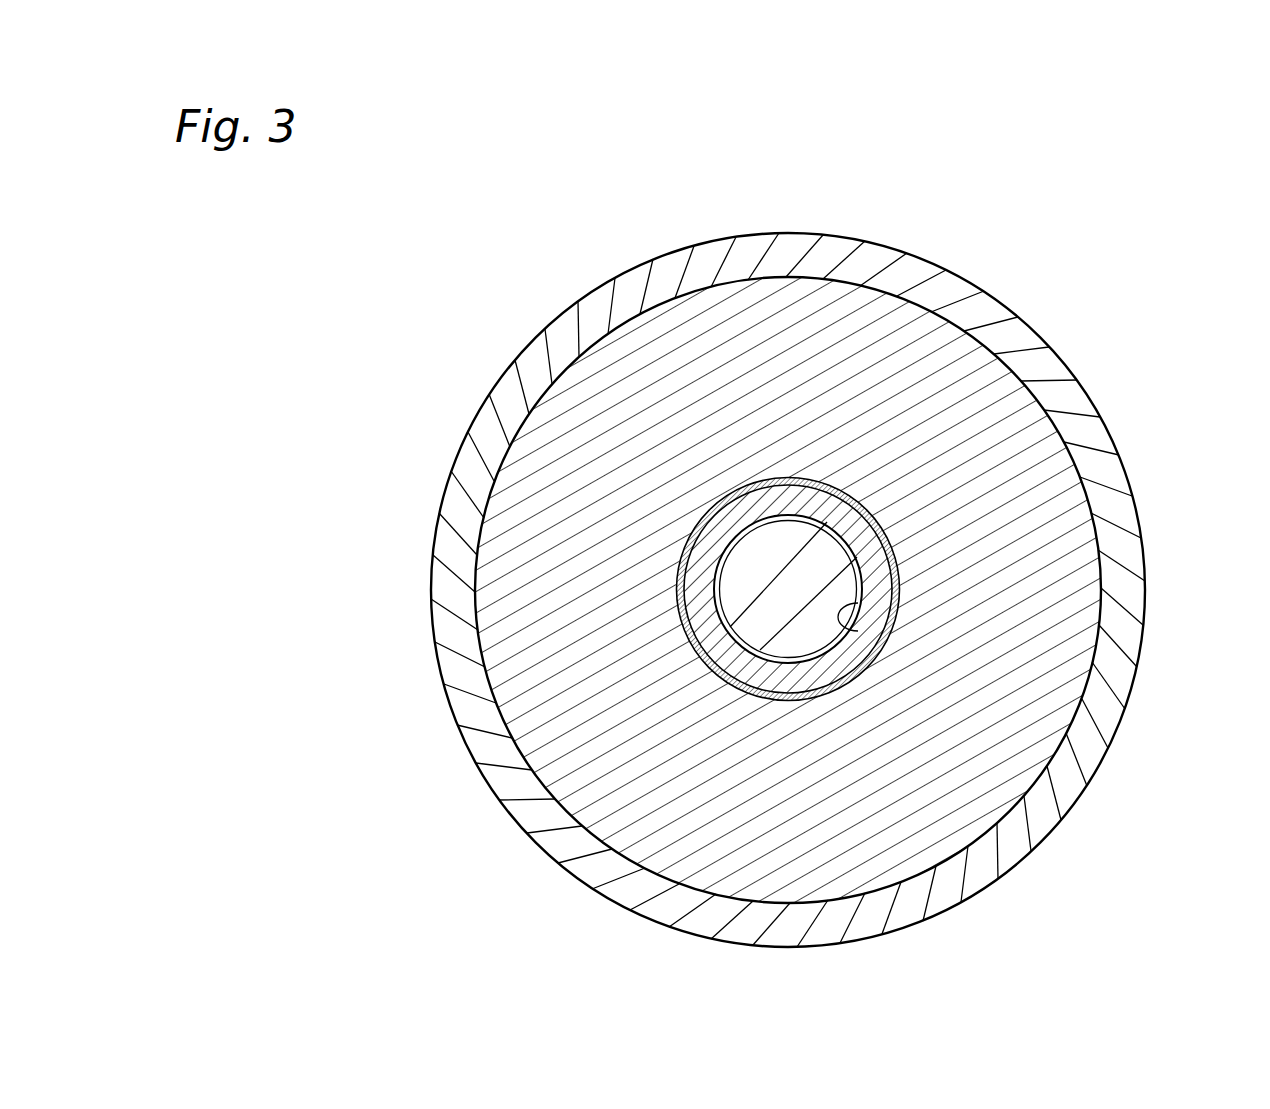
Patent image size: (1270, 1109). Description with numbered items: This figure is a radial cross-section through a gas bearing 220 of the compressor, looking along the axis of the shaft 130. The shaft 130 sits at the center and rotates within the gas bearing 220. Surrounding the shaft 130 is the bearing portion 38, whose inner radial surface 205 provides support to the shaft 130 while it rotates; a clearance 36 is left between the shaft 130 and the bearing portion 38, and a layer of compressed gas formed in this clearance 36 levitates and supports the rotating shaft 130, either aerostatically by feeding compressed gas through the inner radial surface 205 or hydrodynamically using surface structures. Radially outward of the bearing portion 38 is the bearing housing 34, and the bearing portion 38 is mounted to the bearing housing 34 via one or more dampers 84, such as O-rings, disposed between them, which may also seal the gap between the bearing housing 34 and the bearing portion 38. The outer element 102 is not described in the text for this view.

The outer sheath 102 is at (607, 282).
The bearing housing 34 is at (1015, 730).
The gas bearing 220 is at (820, 481).
The dampers 84 is at (869, 557).
The bearing portion 38 is at (891, 532).
The clearance 36 is at (697, 557).
The shaft 130 is at (766, 548).
The inner radial surface 205 is at (840, 613).